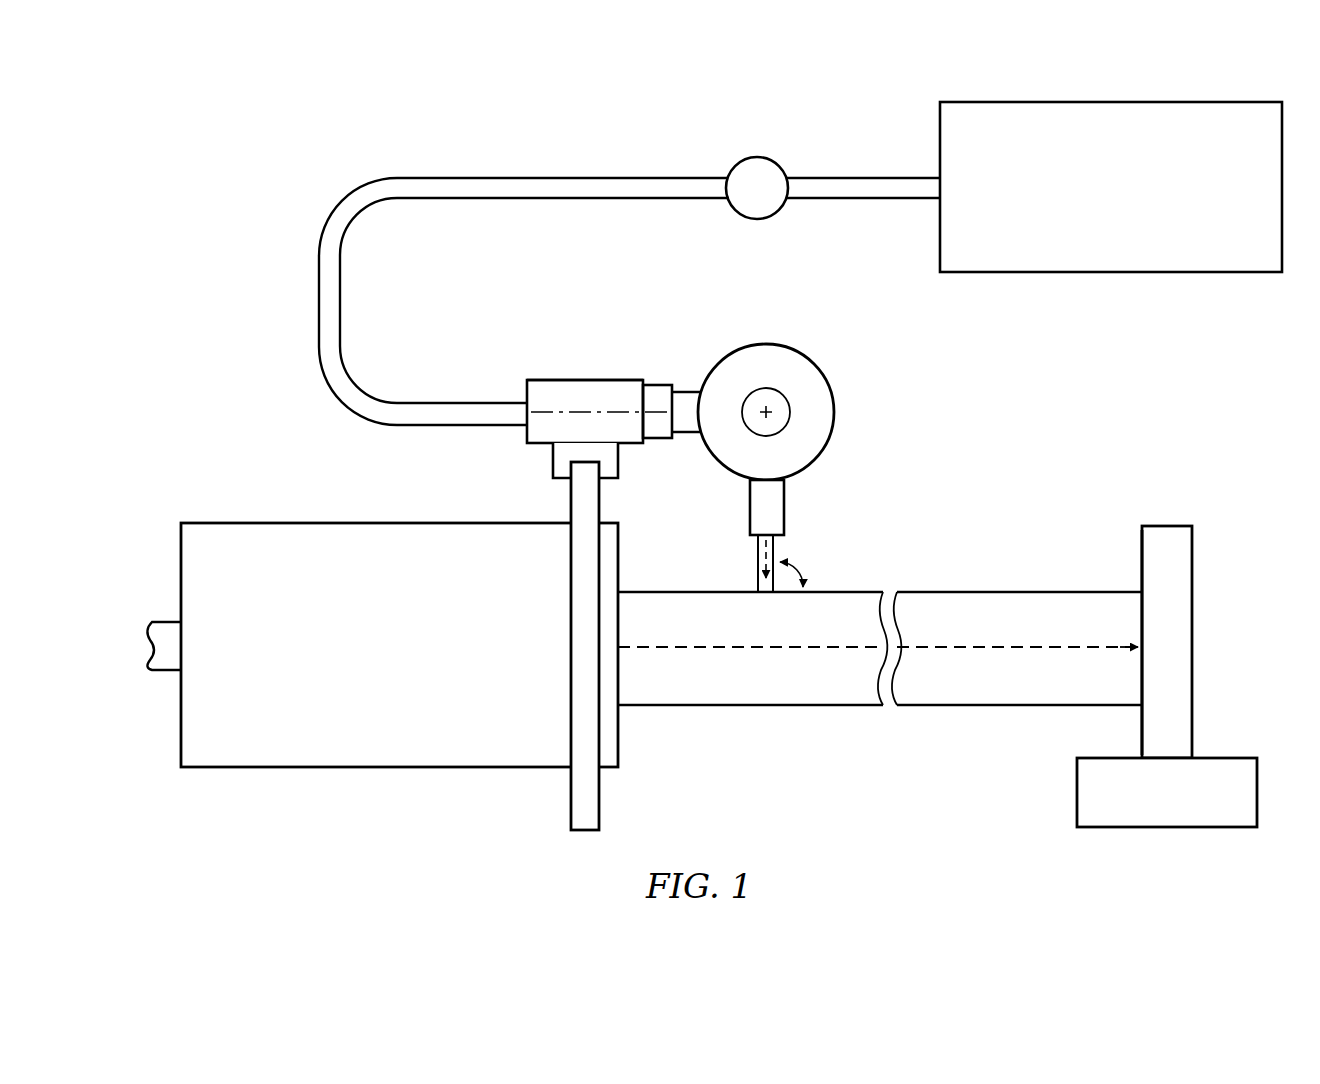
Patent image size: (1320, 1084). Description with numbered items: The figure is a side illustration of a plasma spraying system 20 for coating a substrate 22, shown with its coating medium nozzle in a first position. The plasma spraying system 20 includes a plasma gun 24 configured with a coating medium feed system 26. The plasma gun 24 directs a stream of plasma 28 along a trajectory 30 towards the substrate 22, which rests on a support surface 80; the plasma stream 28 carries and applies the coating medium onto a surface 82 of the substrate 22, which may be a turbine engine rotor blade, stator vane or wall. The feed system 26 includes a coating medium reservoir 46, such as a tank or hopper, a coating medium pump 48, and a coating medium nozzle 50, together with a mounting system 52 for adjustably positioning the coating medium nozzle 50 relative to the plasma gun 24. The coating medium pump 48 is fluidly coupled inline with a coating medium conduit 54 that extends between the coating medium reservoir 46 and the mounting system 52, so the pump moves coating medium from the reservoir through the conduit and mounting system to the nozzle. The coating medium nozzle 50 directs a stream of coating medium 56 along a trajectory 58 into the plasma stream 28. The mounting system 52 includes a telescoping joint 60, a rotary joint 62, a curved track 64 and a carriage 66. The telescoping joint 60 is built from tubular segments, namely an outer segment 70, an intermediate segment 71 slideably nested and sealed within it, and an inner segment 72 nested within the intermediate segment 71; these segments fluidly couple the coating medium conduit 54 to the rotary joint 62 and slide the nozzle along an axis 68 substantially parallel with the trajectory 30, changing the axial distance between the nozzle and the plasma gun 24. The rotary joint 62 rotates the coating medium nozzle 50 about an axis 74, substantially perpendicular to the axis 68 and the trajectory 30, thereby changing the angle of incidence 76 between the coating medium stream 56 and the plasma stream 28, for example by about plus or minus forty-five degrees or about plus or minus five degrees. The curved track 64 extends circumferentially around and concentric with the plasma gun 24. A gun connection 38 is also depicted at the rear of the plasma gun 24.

The plasma spraying system 20 is at (262, 186).
The substrate 22 is at (1193, 540).
The plasma gun 24 is at (278, 522).
The coating medium feed system 26 is at (1004, 428).
The plasma stream 28 is at (673, 706).
The trajectory 30 is at (975, 645).
The gun supply connection 38 is at (160, 672).
The coating medium reservoir 46 is at (1120, 274).
The coating medium pump 48 is at (738, 163).
The coating medium nozzle 50 is at (784, 505).
The mounting system 52 is at (700, 346).
The coating medium conduit 54 is at (342, 300).
The coating medium stream 56 is at (757, 550).
The trajectory 58 is at (757, 578).
The telescoping joint 60 is at (540, 374).
The rotary joint 62 is at (811, 362).
The curved track 64 is at (600, 505).
The carriage 66 is at (553, 466).
The axis 68 is at (517, 390).
The outer segment 70 is at (574, 379).
The intermediate segment 71 is at (652, 384).
The inner segment 72 is at (689, 433).
The axis 74 is at (772, 411).
The angle of incidence 76 is at (802, 566).
The support surface 80 is at (1077, 788).
The surface 82 is at (1142, 546).